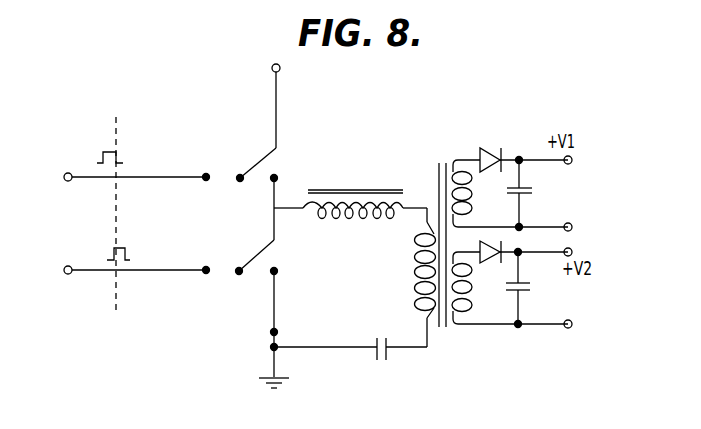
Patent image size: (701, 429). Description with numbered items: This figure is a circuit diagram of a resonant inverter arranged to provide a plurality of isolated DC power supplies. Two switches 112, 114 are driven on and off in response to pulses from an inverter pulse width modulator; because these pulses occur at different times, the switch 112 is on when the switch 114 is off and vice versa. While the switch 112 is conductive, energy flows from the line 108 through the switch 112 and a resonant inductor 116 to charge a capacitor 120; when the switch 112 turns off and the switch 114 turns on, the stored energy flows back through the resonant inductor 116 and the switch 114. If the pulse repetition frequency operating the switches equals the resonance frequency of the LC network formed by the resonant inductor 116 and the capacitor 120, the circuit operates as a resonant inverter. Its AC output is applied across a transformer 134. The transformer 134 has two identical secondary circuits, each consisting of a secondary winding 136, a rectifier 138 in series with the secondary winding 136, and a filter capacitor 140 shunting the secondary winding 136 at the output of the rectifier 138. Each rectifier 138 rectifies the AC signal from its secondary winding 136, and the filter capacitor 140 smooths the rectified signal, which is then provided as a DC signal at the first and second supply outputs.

The line 108 is at (277, 103).
The switch 112 is at (256, 162).
The switch 114 is at (252, 256).
The resonant inductor 116 is at (358, 188).
The capacitor 120 is at (388, 360).
The transformer 134 is at (418, 255).
The secondary winding 136 is at (455, 162).
The rectifier 138 is at (493, 147).
The filter capacitor 140 is at (532, 189).